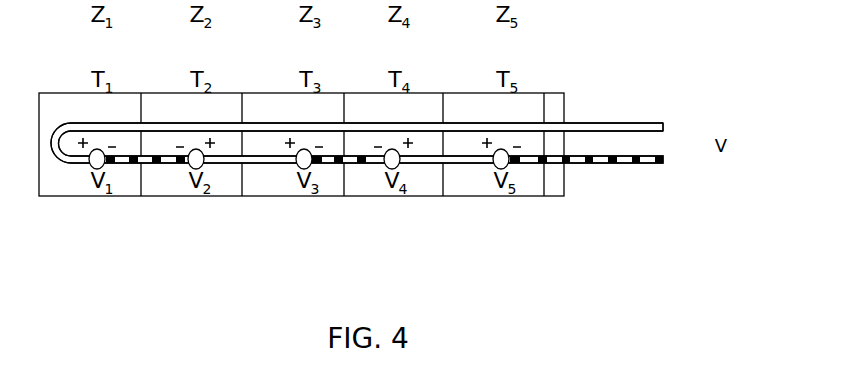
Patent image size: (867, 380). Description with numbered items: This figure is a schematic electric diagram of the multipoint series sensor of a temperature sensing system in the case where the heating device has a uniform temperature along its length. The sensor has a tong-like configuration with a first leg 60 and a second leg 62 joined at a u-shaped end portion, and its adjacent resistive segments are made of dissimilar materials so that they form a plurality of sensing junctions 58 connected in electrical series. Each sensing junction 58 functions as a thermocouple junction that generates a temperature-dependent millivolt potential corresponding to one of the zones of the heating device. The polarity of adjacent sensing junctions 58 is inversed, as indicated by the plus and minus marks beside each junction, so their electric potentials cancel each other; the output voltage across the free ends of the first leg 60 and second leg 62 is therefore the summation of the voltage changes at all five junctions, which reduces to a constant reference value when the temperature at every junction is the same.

The sensing junction 58 is at (84, 173).
The first leg 60 is at (606, 108).
The second leg 62 is at (605, 177).